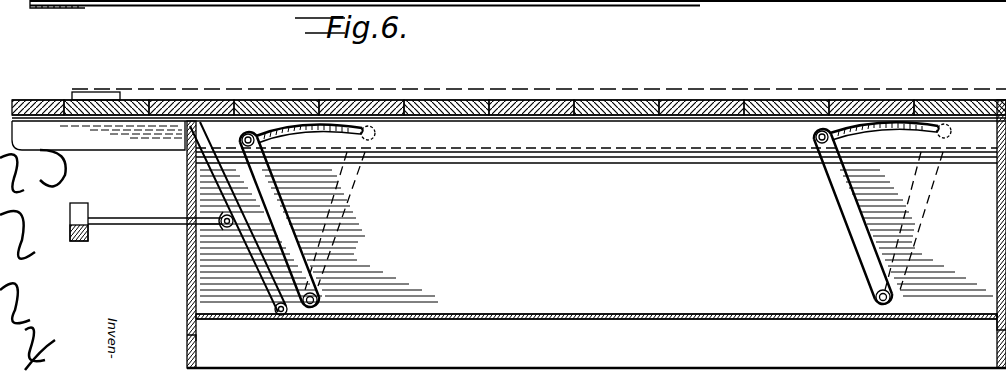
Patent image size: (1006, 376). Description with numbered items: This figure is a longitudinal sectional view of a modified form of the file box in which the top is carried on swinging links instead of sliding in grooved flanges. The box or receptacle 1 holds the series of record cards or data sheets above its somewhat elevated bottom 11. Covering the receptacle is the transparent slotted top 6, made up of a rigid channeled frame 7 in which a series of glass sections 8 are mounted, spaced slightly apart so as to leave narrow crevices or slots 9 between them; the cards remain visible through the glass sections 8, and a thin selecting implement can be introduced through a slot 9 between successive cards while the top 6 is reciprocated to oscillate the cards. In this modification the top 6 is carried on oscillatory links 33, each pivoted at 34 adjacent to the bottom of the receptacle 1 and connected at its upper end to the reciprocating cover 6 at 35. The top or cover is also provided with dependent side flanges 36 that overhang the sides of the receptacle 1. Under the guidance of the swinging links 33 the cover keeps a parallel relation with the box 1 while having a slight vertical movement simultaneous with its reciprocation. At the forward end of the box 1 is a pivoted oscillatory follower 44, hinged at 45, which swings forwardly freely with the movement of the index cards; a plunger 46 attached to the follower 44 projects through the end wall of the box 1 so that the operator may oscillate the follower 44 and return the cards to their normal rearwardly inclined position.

The box or receptacle 1 is at (840, 2).
The sliding top 6 is at (60, 100).
The rigid channeled frame 7 is at (216, 100).
The glass sections 8 is at (290, 100).
The crevices or narrow slots 9 is at (404, 102).
The bottom of the receptacle 11 is at (456, 318).
The oscillatory links 33 is at (280, 217).
The pivot of links 34 is at (416, 263).
The connection of links to cover 35 is at (244, 127).
The dependent side flanges 36 is at (156, 143).
The pivoted oscillatory follower 44 is at (262, 260).
The hinge of follower 45 is at (290, 337).
The plunger 46 is at (168, 228).